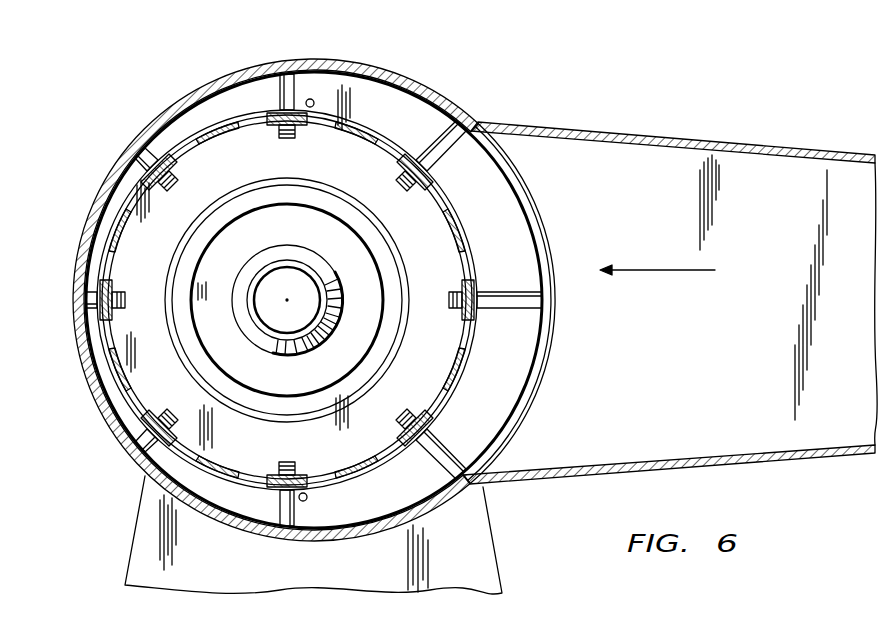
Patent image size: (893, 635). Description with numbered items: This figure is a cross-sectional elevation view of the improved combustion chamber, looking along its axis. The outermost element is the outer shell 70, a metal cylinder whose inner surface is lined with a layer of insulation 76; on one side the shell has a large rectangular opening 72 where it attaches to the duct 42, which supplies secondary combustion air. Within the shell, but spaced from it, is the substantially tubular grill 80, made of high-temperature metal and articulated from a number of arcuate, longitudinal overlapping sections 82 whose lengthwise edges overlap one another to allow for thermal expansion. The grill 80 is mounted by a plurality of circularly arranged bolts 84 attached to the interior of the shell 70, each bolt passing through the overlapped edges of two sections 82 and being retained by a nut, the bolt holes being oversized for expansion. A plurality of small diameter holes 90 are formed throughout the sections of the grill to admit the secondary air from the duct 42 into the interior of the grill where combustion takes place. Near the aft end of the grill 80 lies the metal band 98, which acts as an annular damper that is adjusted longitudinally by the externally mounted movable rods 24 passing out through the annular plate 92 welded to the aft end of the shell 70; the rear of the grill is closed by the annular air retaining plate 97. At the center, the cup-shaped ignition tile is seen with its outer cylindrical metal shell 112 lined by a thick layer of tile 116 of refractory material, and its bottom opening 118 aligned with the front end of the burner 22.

The outer shell 70 is at (268, 58).
The movable rods 24 is at (311, 99).
The layer of insulation 76 is at (382, 72).
The grill 80 is at (395, 138).
The duct 42 is at (606, 125).
The metal band 98 is at (448, 226).
The rectangular opening 72 is at (548, 240).
The bolts 84 is at (99, 297).
The small diameter holes 90 is at (135, 207).
The opening 118 is at (242, 289).
The outer cylindrical metal shell 112 is at (383, 237).
The layer of tile 116 is at (343, 350).
The burner 22 is at (247, 318).
The annular air retaining plate 97 is at (403, 412).
The arcuate longitudinal overlapping sections 82 is at (240, 485).
The annular plate 92 is at (138, 433).